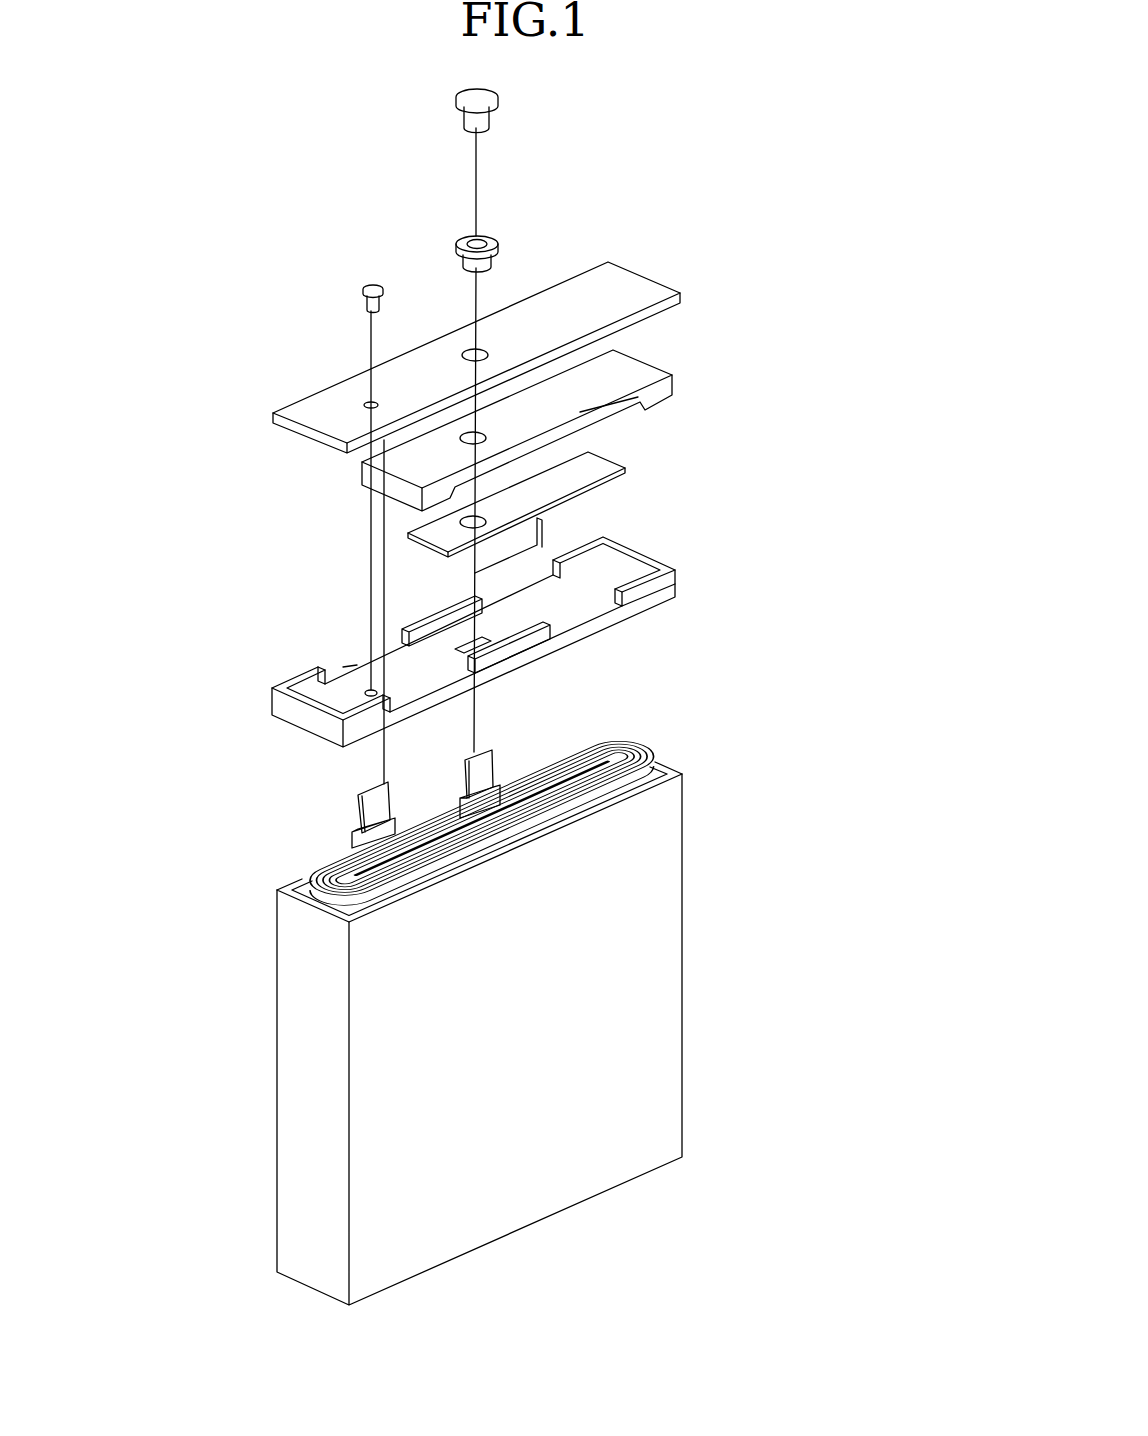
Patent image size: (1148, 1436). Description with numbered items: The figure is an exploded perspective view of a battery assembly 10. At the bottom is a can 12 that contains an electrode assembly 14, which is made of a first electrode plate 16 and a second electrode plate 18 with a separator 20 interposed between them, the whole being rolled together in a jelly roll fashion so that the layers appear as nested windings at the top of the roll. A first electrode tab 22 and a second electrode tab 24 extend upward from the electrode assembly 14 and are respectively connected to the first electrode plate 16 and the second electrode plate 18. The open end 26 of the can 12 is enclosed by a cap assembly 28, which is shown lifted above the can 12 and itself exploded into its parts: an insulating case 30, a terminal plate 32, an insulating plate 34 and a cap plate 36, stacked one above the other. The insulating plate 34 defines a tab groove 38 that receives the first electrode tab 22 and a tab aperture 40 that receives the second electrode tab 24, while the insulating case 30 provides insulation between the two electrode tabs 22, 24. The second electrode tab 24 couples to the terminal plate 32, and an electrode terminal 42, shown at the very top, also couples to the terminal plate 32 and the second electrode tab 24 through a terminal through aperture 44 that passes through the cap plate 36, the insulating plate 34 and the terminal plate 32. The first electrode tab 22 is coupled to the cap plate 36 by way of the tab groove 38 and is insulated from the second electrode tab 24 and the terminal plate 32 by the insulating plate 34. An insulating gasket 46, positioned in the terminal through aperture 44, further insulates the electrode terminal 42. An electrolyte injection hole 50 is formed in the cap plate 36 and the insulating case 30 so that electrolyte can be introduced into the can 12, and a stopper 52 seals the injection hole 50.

The battery assembly 10 is at (245, 577).
The can 12 is at (682, 918).
The electrode assembly 14 is at (789, 637).
The first electrode plate 16 is at (648, 752).
The second electrode plate 18 is at (610, 748).
The separator 20 is at (635, 748).
The first electrode tab 22 is at (367, 810).
The second electrode tab 24 is at (465, 768).
The open end 26 is at (668, 638).
The cap assembly 28 is at (814, 82).
The insulating case 30 is at (637, 557).
The terminal plate 32 is at (612, 467).
The insulating plate 34 is at (640, 367).
The cap plate 36 is at (625, 287).
The tab groove 38 is at (358, 664).
The tab aperture 40 is at (470, 648).
The electrode terminal 42 is at (485, 93).
The terminal through aperture 44 is at (470, 347).
The insulating gasket 46 is at (490, 235).
The electrolyte injection hole 50 is at (369, 404).
The stopper 52 is at (368, 287).